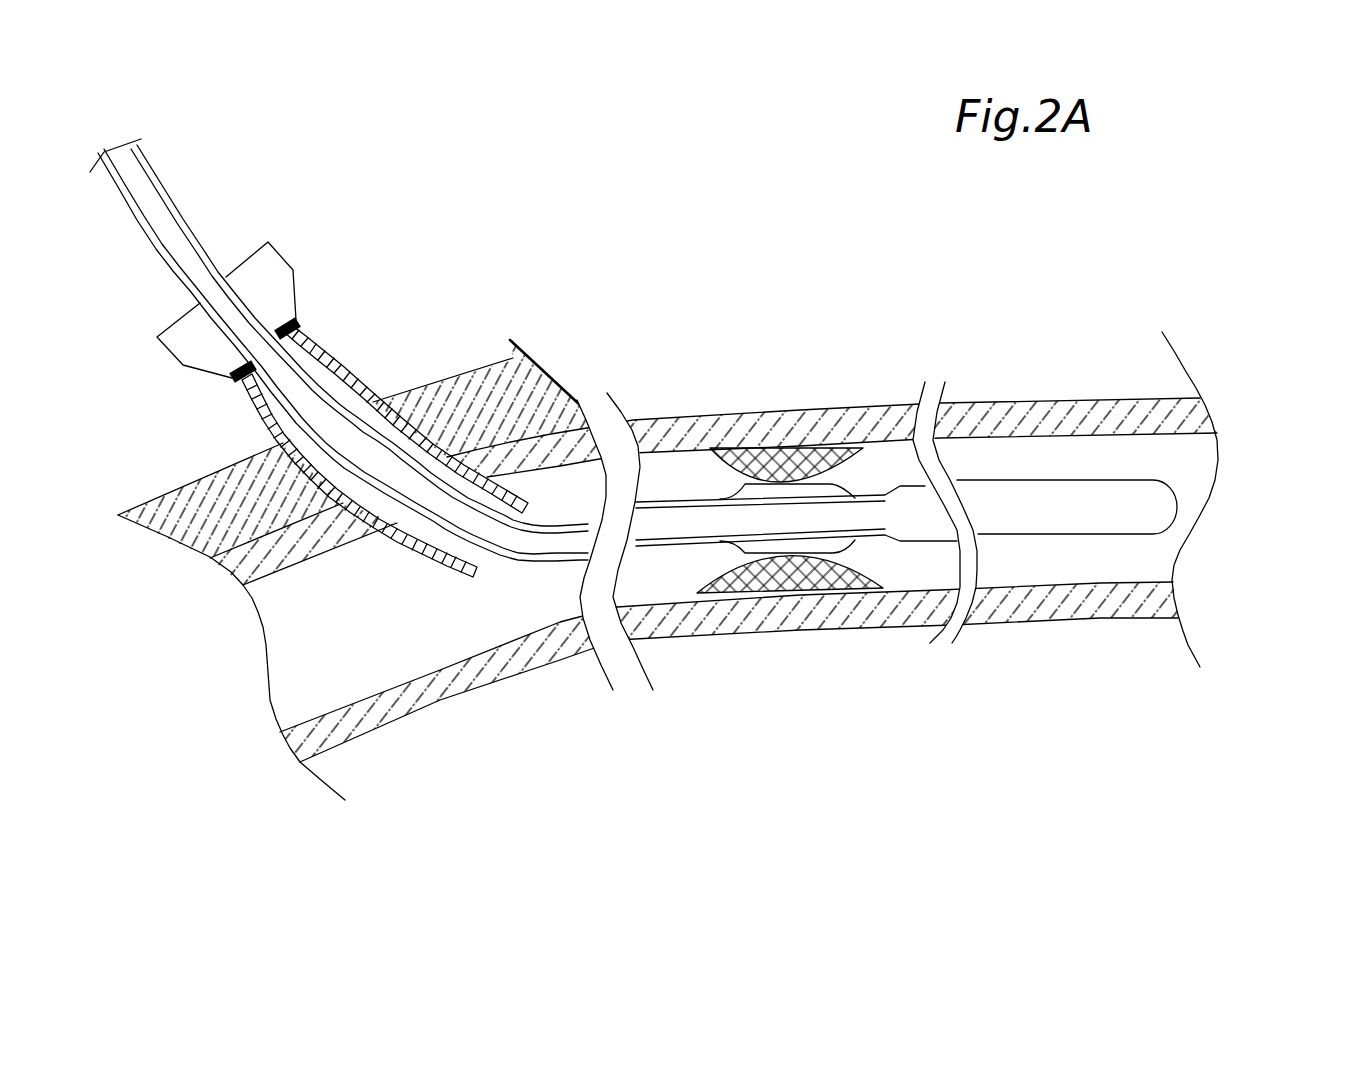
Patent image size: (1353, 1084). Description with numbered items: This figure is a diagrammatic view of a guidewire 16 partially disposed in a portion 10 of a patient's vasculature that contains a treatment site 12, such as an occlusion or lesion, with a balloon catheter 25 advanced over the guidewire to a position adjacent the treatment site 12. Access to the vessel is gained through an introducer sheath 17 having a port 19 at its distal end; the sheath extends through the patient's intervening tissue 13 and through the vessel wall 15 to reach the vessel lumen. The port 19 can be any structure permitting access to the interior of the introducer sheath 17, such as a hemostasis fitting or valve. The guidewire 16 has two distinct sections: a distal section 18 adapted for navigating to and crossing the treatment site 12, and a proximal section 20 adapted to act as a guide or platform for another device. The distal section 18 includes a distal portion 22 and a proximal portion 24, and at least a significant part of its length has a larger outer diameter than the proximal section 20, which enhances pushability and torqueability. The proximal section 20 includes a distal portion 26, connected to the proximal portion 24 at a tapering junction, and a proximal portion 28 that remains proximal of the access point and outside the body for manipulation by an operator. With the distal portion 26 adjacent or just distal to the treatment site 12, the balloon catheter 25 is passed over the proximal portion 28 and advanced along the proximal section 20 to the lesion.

The portion of a patient's vasculature 10 is at (1062, 455).
The treatment site 12 is at (783, 593).
The intervening tissue 13 is at (483, 385).
The vessel wall 15 is at (575, 410).
The guidewire 16 is at (915, 527).
The introducer sheath 17 is at (317, 348).
The distal section 18 is at (1000, 522).
The port 19 is at (275, 285).
The proximal section 20 is at (477, 523).
The distal portion 22 is at (1172, 520).
The proximal portion 24 is at (930, 497).
The balloon catheter 25 is at (730, 495).
The distal portion 26 is at (807, 517).
The proximal portion 28 is at (182, 240).